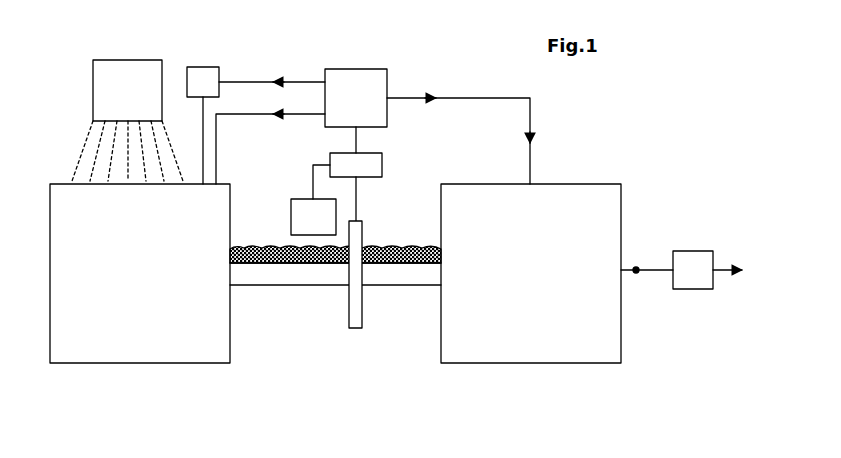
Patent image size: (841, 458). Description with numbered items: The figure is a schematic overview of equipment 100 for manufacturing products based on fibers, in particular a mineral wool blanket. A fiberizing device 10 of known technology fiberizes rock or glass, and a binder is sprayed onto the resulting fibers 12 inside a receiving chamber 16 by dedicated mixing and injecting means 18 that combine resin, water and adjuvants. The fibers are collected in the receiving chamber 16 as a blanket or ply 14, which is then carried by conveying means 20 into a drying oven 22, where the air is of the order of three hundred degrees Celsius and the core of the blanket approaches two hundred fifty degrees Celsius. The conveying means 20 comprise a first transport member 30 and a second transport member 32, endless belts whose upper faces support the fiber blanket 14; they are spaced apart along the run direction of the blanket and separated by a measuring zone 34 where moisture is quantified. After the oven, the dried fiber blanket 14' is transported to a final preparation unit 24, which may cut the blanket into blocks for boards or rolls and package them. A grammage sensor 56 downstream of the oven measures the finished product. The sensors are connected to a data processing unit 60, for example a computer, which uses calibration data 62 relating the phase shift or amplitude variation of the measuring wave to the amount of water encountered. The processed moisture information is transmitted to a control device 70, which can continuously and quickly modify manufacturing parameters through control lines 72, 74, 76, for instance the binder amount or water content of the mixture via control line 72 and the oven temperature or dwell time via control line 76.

The fiberizing device 10 is at (90, 88).
The fibers 12 is at (88, 136).
The fiber blanket 14 is at (335, 226).
The dried fiber blanket 14' is at (647, 306).
The receiving chamber 16 is at (93, 365).
The mixing and injecting means 18 is at (205, 72).
The conveying means 20 is at (310, 305).
The drying oven 22 is at (563, 184).
The final preparation unit 24 is at (695, 251).
The first transport member 30 is at (254, 272).
The second transport member 32 is at (392, 273).
The measuring zone 34 is at (345, 287).
The grammage sensor 56 is at (636, 268).
The data processing unit 60 is at (382, 163).
The calibration data 62 is at (313, 200).
The control device 70 is at (373, 69).
The control line 72 is at (302, 80).
The control line 74 is at (312, 115).
The control line 76 is at (410, 97).
The equipment 100 is at (172, 398).